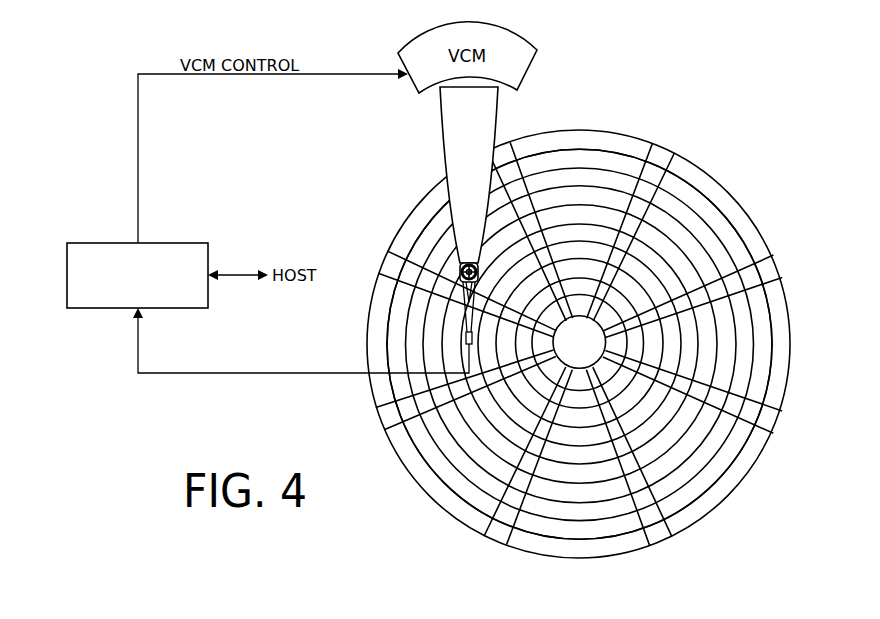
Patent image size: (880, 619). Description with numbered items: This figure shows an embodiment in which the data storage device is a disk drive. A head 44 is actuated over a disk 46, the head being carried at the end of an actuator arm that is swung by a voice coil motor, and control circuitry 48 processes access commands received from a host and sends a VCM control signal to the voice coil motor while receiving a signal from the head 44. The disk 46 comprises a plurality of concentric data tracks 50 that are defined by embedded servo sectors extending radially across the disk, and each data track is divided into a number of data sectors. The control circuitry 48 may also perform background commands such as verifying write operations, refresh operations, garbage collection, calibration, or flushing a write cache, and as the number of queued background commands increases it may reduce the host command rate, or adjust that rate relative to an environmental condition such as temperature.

The head 44 is at (459, 348).
The disk 46 is at (729, 176).
The control circuitry 48 is at (176, 243).
The data tracks 50 is at (590, 158).